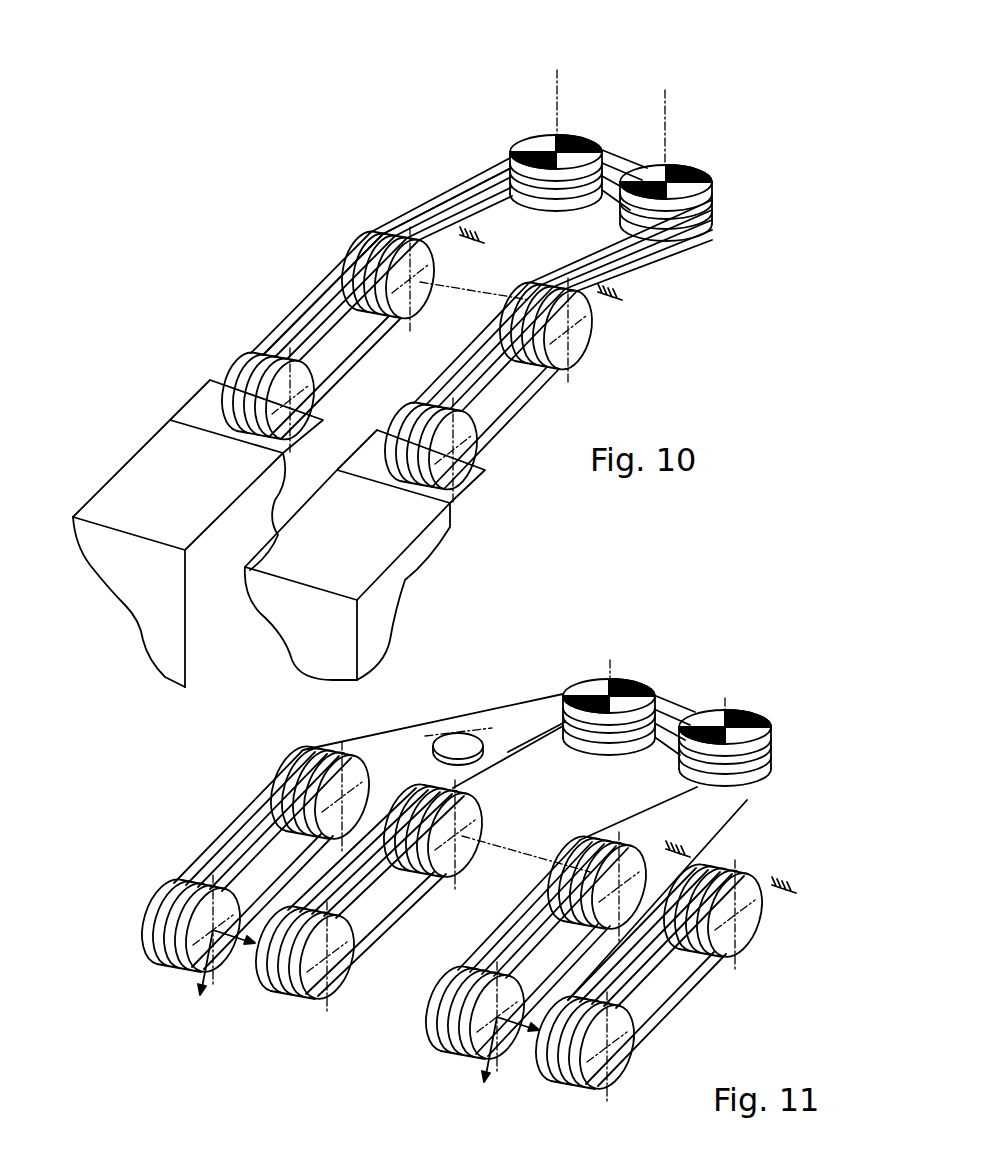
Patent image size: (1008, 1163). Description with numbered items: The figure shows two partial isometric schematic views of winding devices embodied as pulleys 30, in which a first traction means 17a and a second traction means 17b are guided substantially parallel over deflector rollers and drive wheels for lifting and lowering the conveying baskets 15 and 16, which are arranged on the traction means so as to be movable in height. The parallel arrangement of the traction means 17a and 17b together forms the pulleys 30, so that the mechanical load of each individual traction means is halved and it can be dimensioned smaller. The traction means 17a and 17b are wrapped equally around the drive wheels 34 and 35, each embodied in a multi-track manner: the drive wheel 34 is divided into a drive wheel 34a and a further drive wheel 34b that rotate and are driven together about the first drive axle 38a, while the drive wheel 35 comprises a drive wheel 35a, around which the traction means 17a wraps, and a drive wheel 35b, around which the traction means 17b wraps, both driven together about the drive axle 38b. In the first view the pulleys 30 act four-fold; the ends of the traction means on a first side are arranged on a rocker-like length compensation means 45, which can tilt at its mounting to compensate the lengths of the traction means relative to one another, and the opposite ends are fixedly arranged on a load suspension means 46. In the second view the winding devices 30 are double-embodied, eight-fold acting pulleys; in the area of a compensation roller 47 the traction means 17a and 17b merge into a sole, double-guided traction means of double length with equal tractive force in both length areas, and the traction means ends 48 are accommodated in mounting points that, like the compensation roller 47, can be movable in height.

In FIG. 10, the conveying basket 15 is at (112, 478).
In FIG. 10, the conveying basket 16 is at (407, 580).
In FIG. 10, the first traction means 17a is at (447, 192).
In FIG. 11, the first traction means 17a is at (518, 694).
In FIG. 10, the second traction means 17b is at (407, 237).
In FIG. 11, the second traction means 17b is at (507, 744).
In FIG. 10, the pulleys 30 is at (243, 277).
In FIG. 11, the pulleys 30 is at (207, 820).
In FIG. 10, the drive wheel 34 is at (503, 171).
In FIG. 11, the drive wheel 34 is at (612, 696).
In FIG. 10, the drive wheel 34a is at (538, 134).
In FIG. 11, the drive wheel 34a is at (620, 674).
In FIG. 10, the further drive wheel 34b is at (556, 214).
In FIG. 11, the further drive wheel 34b is at (573, 753).
In FIG. 10, the drive wheel 35 is at (719, 205).
In FIG. 11, the drive wheel 35 is at (773, 746).
In FIG. 10, the drive wheel 35a is at (691, 168).
In FIG. 11, the drive wheel 35a is at (738, 711).
In FIG. 10, the drive wheel 35b is at (696, 234).
In FIG. 11, the drive wheel 35b is at (737, 798).
In FIG. 10, the first drive axle 38a is at (558, 76).
In FIG. 10, the drive axle 38b is at (667, 97).
In FIG. 10, the length compensation means 45 is at (470, 245).
In FIG. 10, the load suspension means 46 is at (620, 300).
In FIG. 11, the compensation roller 47 is at (440, 741).
In FIG. 11, the traction means ends 48 is at (790, 890).